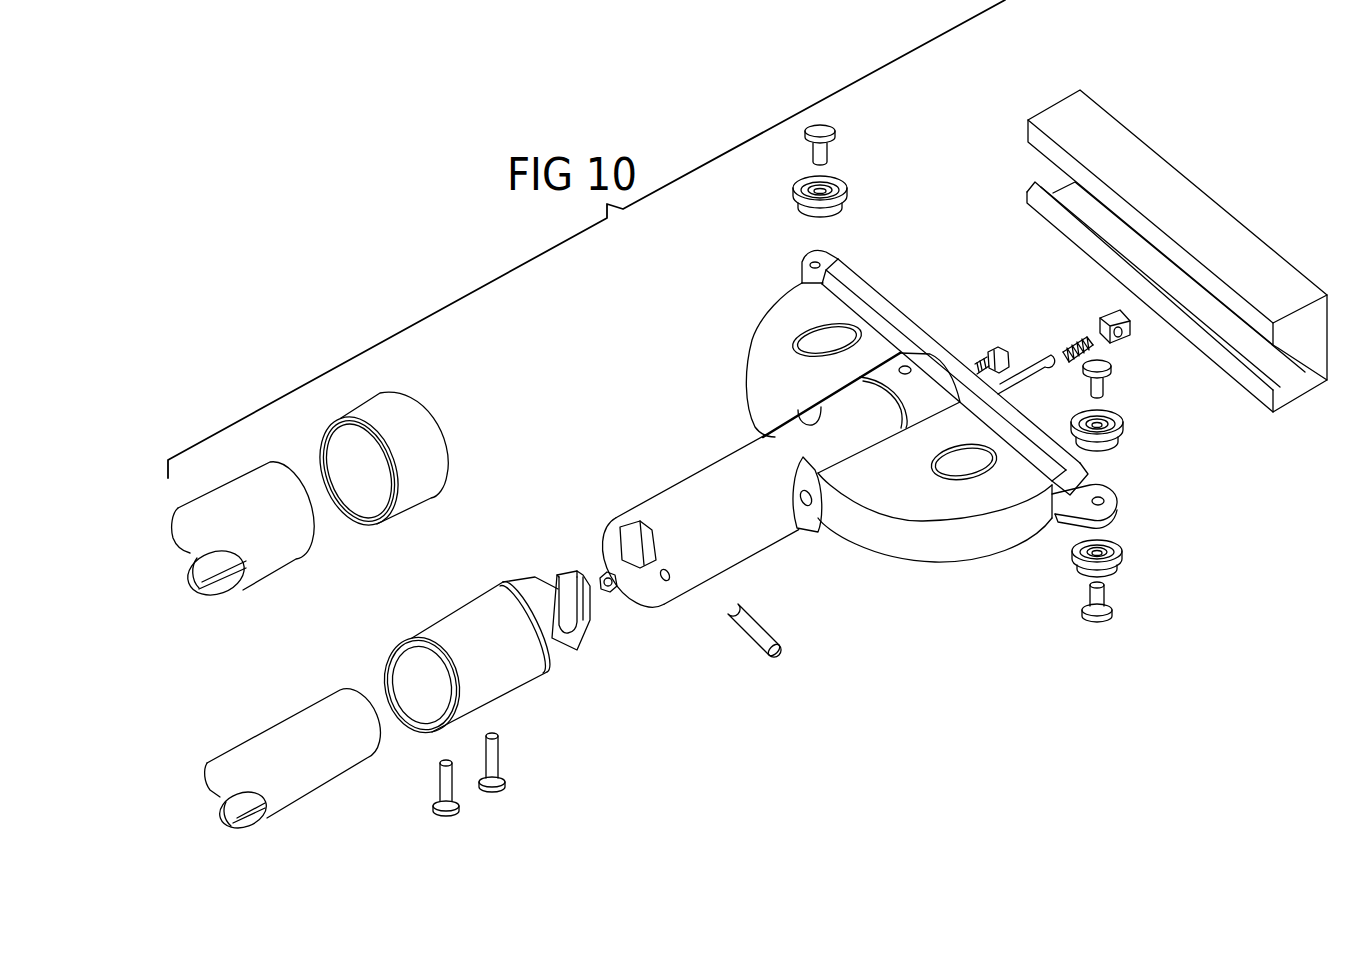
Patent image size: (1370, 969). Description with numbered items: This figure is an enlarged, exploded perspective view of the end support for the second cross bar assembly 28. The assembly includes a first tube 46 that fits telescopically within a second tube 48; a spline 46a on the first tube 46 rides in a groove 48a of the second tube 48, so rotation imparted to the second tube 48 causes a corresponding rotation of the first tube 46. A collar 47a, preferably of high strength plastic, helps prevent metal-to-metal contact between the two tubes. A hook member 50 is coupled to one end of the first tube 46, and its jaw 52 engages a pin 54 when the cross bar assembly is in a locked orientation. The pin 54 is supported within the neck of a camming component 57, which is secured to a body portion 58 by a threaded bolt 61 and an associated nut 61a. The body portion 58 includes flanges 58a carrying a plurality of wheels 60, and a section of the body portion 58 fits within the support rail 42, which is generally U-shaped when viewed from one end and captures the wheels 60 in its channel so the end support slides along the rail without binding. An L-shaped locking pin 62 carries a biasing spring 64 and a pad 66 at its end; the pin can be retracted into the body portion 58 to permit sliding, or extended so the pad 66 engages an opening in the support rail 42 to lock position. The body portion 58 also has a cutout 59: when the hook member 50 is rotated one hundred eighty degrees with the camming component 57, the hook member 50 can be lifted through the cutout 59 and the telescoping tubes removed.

The second cross bar assembly 28 is at (634, 422).
The support rail 42 is at (1058, 109).
The first tube 46 is at (293, 774).
The spline 46a is at (235, 828).
The collar 47a is at (430, 483).
The second tube 48 is at (249, 554).
The groove 48a is at (200, 596).
The hook member 50 is at (503, 690).
The jaw 52 is at (590, 625).
The pin 54 is at (778, 654).
The camming component 57 is at (730, 560).
The body portion 58 is at (900, 547).
The flange 58a is at (1118, 517).
The cutout 59 is at (772, 412).
The wheel 60 is at (797, 186).
The threaded bolt 61 is at (983, 360).
The nut 61a is at (604, 578).
The locking pin 62 is at (1030, 368).
The biasing spring 64 is at (1078, 340).
The pad 66 is at (1103, 317).